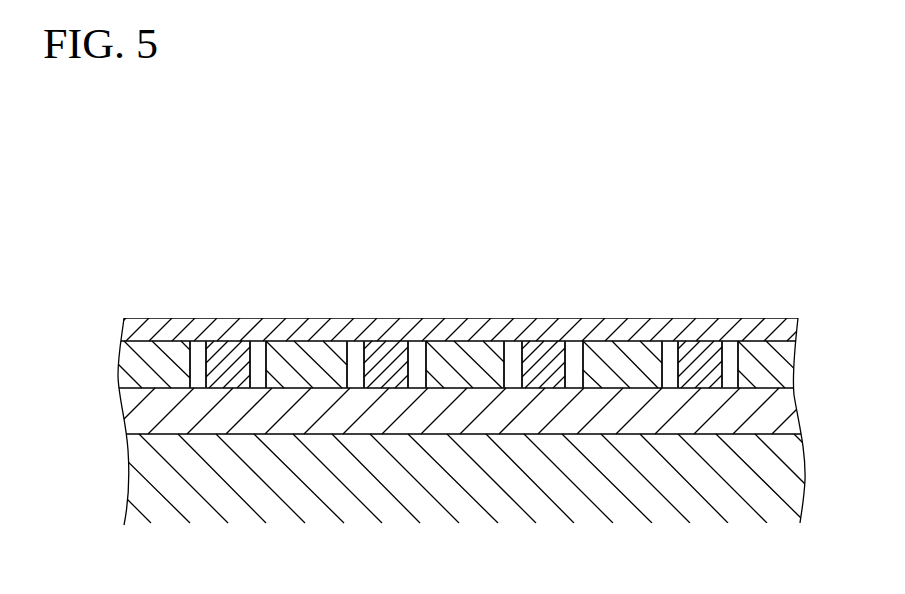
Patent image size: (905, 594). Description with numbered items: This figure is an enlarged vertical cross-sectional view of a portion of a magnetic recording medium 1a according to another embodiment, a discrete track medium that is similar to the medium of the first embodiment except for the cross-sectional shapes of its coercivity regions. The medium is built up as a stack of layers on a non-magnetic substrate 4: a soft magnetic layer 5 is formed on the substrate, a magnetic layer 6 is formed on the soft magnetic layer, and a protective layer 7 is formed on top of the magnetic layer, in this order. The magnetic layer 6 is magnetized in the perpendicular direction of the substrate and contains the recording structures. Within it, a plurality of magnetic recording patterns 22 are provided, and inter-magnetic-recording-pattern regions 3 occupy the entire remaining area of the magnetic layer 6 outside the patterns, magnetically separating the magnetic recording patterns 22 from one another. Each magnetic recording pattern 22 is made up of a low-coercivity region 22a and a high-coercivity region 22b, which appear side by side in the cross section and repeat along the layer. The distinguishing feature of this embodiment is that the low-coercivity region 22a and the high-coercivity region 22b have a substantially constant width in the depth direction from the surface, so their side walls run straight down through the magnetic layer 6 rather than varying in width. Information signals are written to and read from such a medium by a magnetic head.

The magnetic recording medium 1a is at (735, 222).
The inter-magnetic-recording-pattern region 3 is at (462, 357).
The non-magnetic substrate 4 is at (763, 473).
The soft magnetic layer 5 is at (768, 408).
The magnetic layer 6 is at (773, 362).
The protective layer 7 is at (777, 328).
The magnetic recording pattern 22 is at (630, 217).
The low-coercivity region 22a is at (198, 353).
The high-coercivity region 22b is at (228, 353).